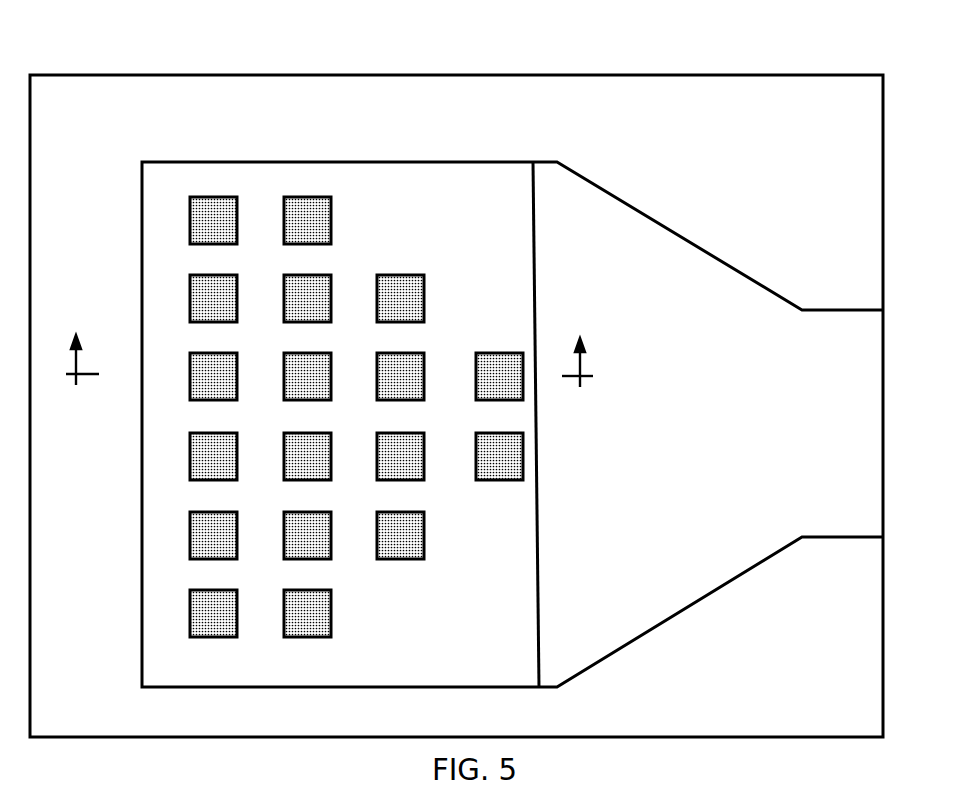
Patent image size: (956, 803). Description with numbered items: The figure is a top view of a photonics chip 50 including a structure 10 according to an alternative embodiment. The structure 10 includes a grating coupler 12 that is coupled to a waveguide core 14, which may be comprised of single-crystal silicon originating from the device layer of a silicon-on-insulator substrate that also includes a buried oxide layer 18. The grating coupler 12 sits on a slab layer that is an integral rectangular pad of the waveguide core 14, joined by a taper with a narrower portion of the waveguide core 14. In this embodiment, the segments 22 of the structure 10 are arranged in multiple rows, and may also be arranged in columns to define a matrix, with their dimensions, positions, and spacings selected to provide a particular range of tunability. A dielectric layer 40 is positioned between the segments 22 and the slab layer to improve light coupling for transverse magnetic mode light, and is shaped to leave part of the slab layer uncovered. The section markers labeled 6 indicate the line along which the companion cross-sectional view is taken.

The photonics chip 50 is at (100, 55).
The structure 10 is at (157, 155).
The dielectric layer 40 is at (490, 673).
The segments 22 is at (212, 228).
The grating coupler 12 is at (512, 291).
The buried oxide layer 18 is at (800, 218).
The waveguide core 14 is at (832, 507).
The section line 6 is at (329, 343).